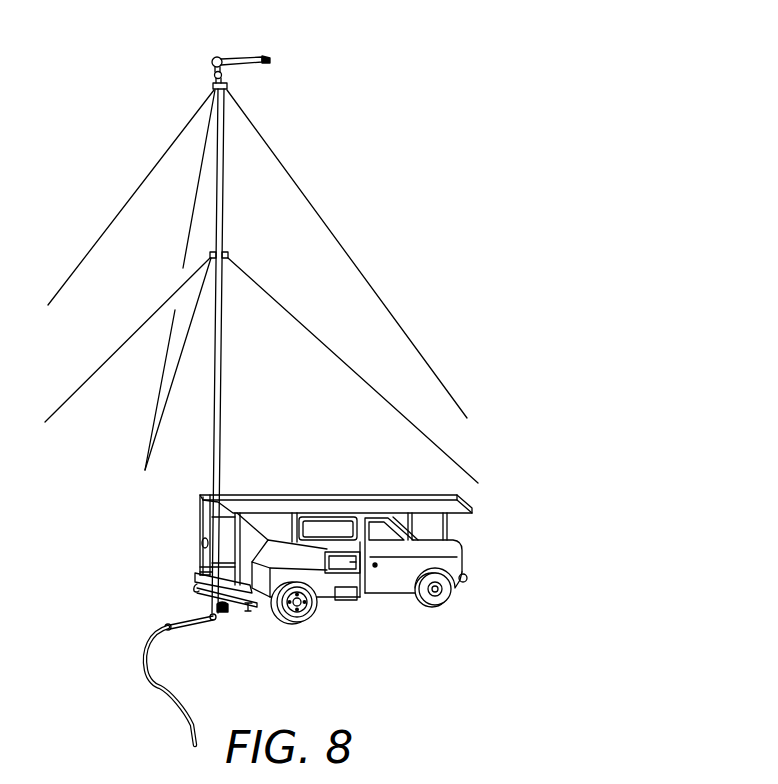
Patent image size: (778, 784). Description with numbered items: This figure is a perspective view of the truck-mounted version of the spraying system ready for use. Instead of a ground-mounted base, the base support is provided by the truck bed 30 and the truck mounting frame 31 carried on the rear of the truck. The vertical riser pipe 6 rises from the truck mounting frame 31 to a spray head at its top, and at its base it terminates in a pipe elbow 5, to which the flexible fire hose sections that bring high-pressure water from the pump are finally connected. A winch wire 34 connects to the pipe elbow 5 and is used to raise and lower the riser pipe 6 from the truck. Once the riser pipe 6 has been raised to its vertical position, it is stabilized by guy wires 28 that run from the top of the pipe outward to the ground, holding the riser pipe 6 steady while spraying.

The pipe elbow 5 is at (211, 625).
The vertical riser pipe 6 is at (225, 213).
The guy wires 28 is at (400, 292).
The truck bed 30 is at (385, 595).
The truck mounting frame 31 is at (198, 554).
The winch wire 34 is at (223, 614).